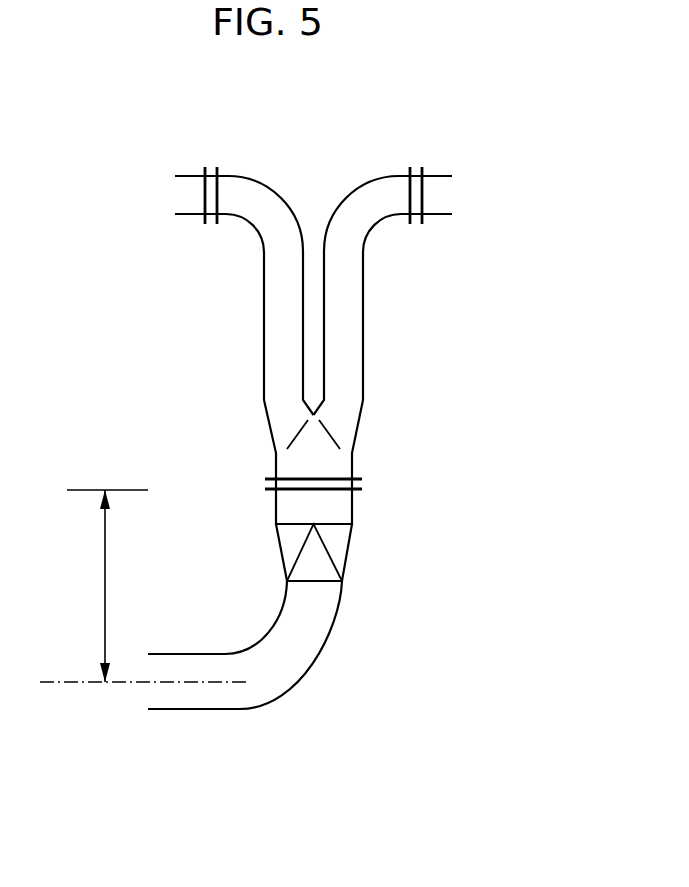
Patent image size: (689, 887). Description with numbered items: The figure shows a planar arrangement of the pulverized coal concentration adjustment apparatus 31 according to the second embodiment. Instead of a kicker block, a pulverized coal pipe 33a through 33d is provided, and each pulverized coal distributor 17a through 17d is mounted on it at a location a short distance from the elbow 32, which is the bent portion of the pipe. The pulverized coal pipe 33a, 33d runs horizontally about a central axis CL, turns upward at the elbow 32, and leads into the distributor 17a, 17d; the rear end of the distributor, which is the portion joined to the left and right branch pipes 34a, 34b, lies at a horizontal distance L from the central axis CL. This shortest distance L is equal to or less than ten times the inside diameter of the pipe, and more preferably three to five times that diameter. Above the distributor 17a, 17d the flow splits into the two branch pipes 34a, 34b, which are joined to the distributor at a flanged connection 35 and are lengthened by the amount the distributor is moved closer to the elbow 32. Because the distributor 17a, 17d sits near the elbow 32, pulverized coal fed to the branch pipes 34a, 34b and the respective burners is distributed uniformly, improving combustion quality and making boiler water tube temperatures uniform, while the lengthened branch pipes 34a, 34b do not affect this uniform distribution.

The pulverized coal distributor 17a is at (412, 579).
The pulverized coal distributor 17d is at (412, 579).
The pulverized coal concentration adjustment apparatus 31 is at (299, 655).
The elbow 32 is at (277, 617).
The pulverized coal pipe 33a is at (200, 718).
The pulverized coal pipe 33d is at (200, 718).
The branch pipe 34a is at (264, 315).
The branch pipe 34b is at (363, 318).
The flange joint 35 is at (362, 489).
The horizontal distance L is at (107, 586).
The central axis CL is at (65, 684).